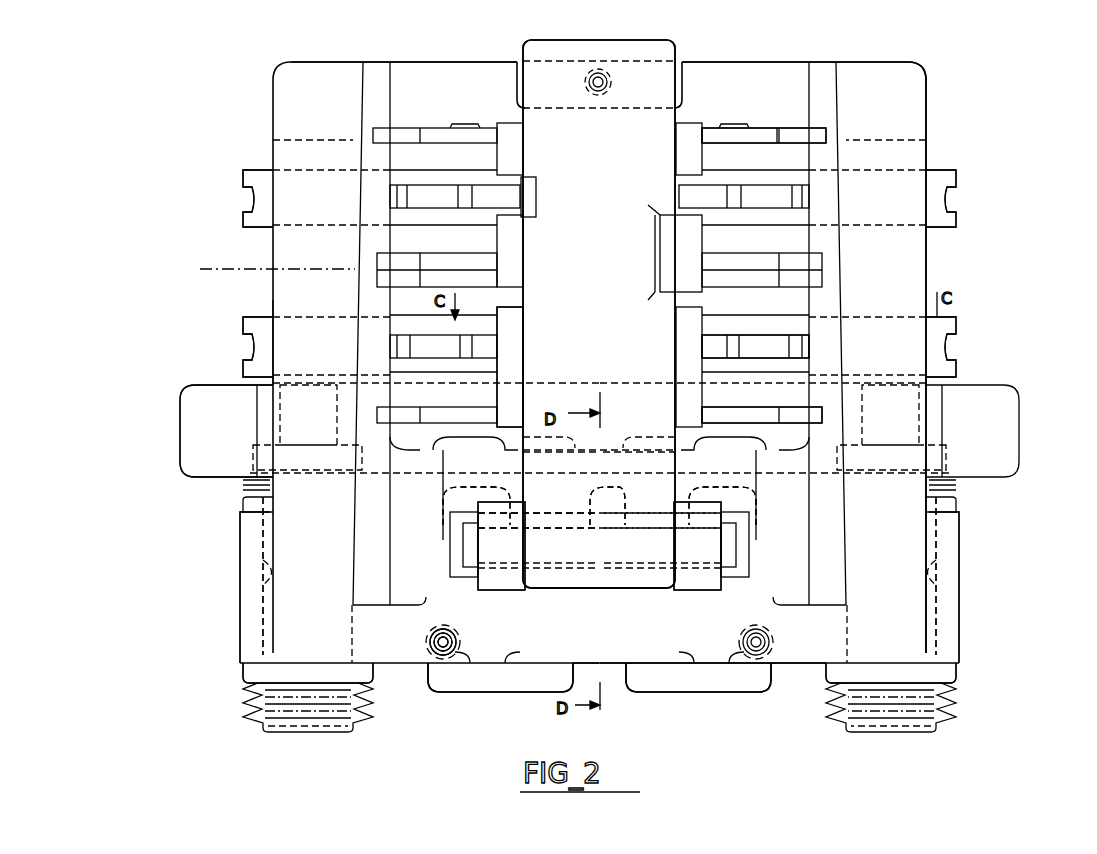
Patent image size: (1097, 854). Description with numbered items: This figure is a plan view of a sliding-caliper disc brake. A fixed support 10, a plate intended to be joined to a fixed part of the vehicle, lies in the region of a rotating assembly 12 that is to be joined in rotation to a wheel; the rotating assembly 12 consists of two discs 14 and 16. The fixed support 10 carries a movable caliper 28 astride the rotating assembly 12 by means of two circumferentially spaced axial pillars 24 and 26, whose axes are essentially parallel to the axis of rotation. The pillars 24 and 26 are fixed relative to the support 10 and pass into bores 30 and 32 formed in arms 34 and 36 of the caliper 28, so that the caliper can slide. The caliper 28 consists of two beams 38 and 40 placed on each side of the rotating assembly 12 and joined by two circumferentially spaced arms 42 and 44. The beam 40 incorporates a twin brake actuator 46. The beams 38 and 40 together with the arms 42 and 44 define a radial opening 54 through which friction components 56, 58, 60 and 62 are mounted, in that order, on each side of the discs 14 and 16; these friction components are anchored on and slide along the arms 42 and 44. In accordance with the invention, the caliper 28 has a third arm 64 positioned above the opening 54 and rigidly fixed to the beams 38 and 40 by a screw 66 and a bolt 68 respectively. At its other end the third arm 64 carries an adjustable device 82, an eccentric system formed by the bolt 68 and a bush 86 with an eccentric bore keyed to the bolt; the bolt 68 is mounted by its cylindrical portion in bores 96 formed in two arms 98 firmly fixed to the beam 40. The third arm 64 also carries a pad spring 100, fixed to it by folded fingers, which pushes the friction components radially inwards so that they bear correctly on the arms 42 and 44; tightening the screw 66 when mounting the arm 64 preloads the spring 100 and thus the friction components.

The fixed support 10 is at (205, 440).
The rotating assembly 12 is at (175, 380).
The disc 14 is at (300, 344).
The disc 16 is at (243, 176).
The axial pillar 24 is at (301, 735).
The axial pillar 26 is at (888, 733).
The movable caliper 28 is at (930, 104).
The bore 30 is at (270, 584).
The bore 32 is at (935, 582).
The arm 34 is at (247, 636).
The arm 36 is at (948, 634).
The beam 38 is at (745, 90).
The beam 40 is at (655, 652).
The arm 42 is at (307, 340).
The arm 44 is at (880, 348).
The twin brake actuator 46 is at (510, 697).
The radial opening 54 is at (800, 215).
The friction component 56 is at (785, 396).
The friction component 58 is at (790, 302).
The friction component 60 is at (793, 240).
The friction component 62 is at (797, 153).
The third arm 64 is at (615, 152).
The screw 66 is at (606, 78).
The bolt 68 is at (445, 545).
The adjustable device 82 is at (618, 594).
The bush 86 is at (599, 503).
The bore 96 is at (763, 500).
The arm 98 is at (686, 590).
The pad spring 100 is at (505, 368).